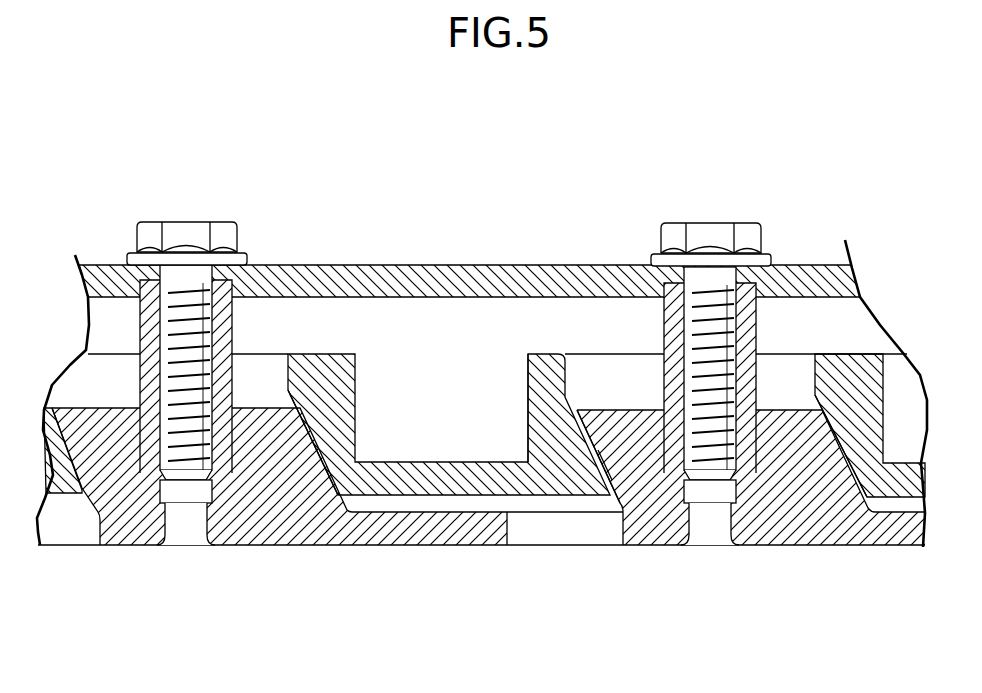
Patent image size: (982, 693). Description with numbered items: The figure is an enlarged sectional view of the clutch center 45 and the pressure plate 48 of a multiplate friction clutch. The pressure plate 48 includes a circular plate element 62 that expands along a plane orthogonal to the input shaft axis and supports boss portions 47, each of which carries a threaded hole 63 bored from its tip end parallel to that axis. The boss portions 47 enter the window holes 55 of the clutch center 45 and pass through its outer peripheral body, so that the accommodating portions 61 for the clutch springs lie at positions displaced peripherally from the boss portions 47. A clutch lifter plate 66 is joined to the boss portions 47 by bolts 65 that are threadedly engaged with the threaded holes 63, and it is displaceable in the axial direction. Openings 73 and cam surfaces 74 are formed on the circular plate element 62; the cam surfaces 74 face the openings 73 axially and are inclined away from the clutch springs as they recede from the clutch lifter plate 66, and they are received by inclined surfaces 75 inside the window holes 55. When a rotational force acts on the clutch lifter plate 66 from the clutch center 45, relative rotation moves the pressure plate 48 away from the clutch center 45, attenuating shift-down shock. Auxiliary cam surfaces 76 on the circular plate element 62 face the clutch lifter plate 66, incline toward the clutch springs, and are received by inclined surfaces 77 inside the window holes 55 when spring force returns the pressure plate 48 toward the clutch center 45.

The clutch center 45 is at (570, 376).
The boss portion 47 is at (228, 336).
The pressure plate 48 is at (347, 552).
The window hole 55 is at (812, 380).
The accommodating portion 61 is at (526, 388).
The circular plate element 62 is at (447, 546).
The threaded hole 63 is at (168, 398).
The bolt 65 is at (185, 233).
The clutch lifter plate 66 is at (388, 283).
The opening 73 is at (508, 525).
The cam surface 74 is at (594, 464).
The inclined surface 75 is at (595, 420).
The auxiliary cam surface 76 is at (320, 460).
The inclined surface 77 is at (313, 455).